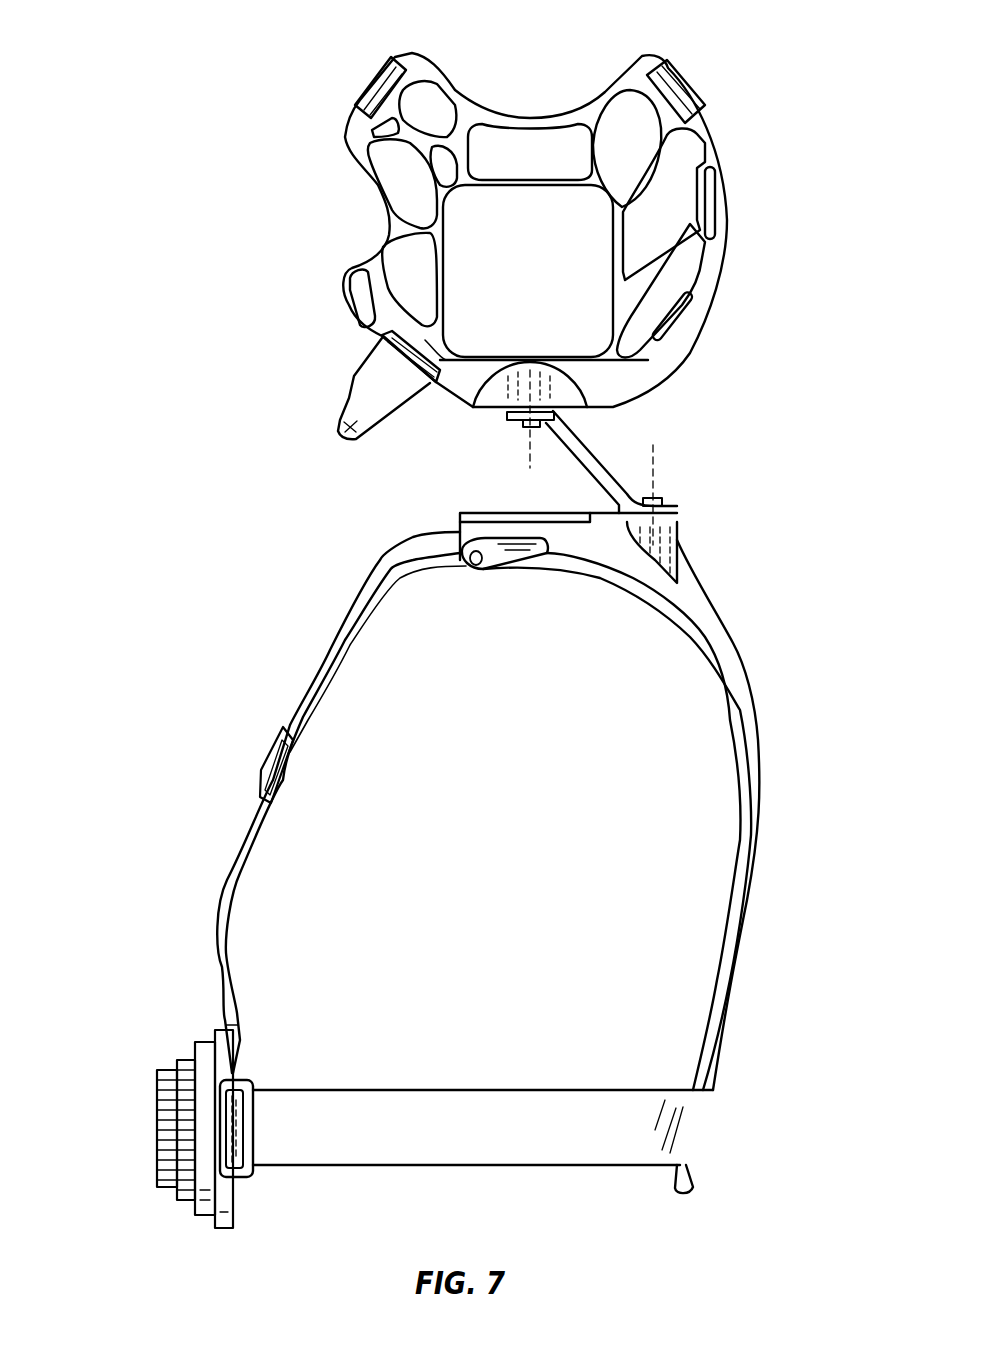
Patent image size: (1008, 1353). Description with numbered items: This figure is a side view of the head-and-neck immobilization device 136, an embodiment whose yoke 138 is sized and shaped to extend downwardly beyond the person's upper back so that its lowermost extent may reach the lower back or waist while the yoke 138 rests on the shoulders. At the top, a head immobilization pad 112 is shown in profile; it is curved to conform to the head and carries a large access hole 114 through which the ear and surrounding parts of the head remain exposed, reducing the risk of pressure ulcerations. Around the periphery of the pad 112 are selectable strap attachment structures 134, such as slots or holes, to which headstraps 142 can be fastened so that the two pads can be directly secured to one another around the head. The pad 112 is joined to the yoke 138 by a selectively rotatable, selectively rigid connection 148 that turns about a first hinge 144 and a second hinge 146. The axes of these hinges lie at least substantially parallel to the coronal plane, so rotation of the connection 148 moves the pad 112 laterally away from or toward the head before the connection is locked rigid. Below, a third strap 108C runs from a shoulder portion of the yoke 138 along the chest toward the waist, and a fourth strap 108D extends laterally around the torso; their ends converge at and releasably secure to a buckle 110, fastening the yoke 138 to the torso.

The head-and-neck immobilization device 136 is at (198, 231).
The head immobilization pad 112 is at (752, 231).
The access hole 114 is at (549, 283).
The selectable strap attachment structure 134 is at (418, 52).
The headstrap 142 is at (364, 86).
The second hinge 146 is at (556, 413).
The selectively rotatable, selectively rigid connection 148 is at (590, 448).
The first hinge 144 is at (663, 499).
The yoke 138 is at (777, 832).
The third strap 108C is at (316, 686).
The fourth strap 108D is at (472, 1110).
The buckle 110 is at (156, 1139).